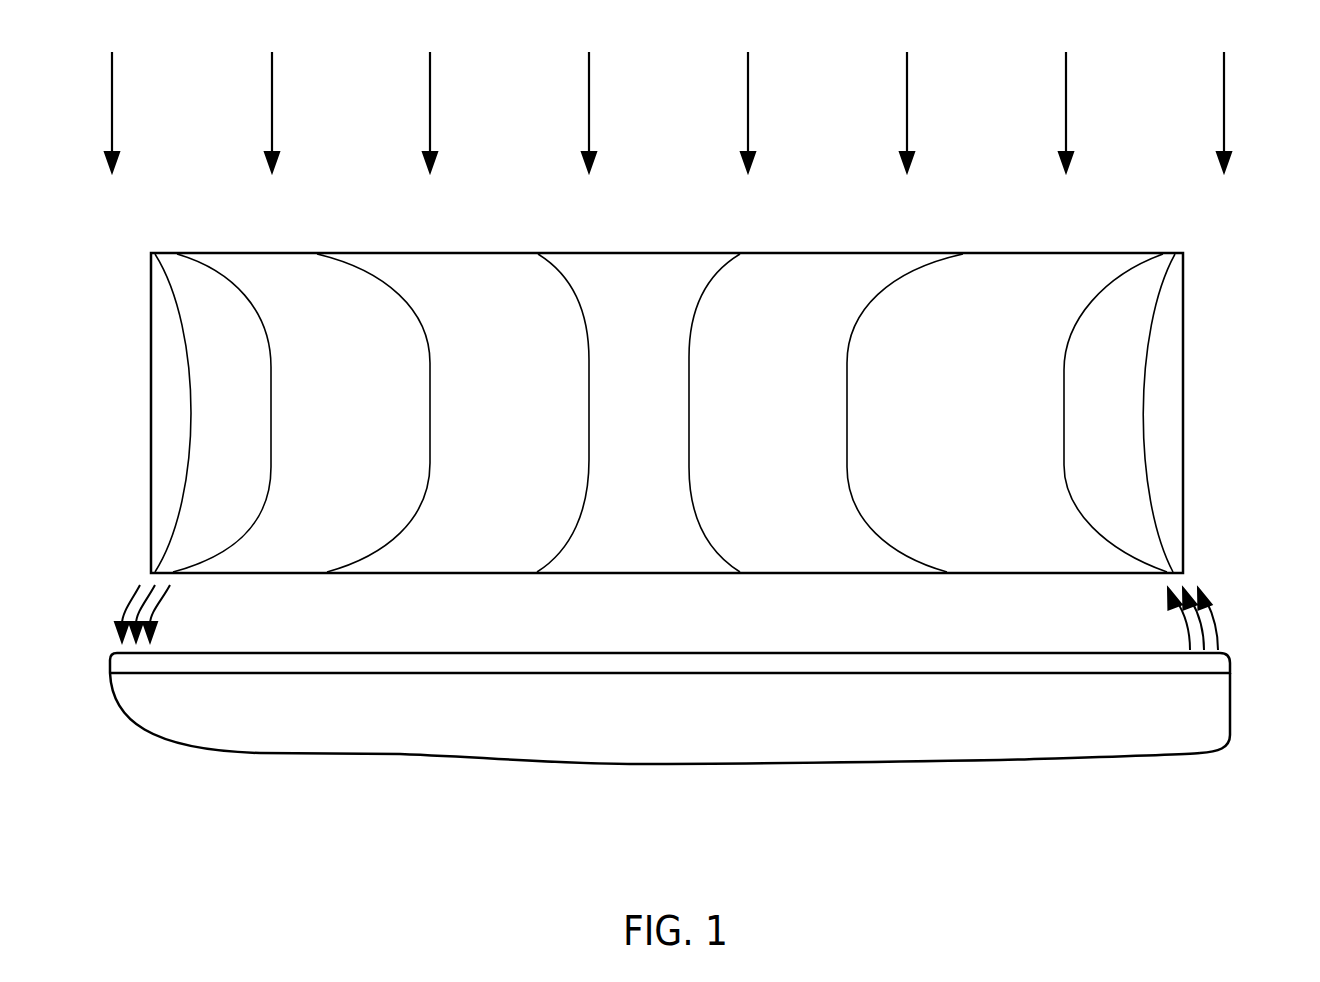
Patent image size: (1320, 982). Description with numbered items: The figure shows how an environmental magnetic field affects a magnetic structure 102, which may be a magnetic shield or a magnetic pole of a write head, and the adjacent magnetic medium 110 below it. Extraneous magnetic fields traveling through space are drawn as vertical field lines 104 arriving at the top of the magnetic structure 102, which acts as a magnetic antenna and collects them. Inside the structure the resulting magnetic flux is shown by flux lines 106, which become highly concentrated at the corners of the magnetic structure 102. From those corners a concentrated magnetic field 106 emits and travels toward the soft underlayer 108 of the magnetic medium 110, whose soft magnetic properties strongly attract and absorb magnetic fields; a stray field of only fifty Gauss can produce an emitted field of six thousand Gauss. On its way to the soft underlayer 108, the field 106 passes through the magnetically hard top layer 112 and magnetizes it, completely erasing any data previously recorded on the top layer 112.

The magnetic structure 102 is at (912, 252).
The field lines 104 is at (748, 82).
The flux lines 106 is at (845, 387).
The soft underlayer 108 is at (568, 716).
The magnetic medium 110 is at (577, 766).
The top layer 112 is at (530, 653).